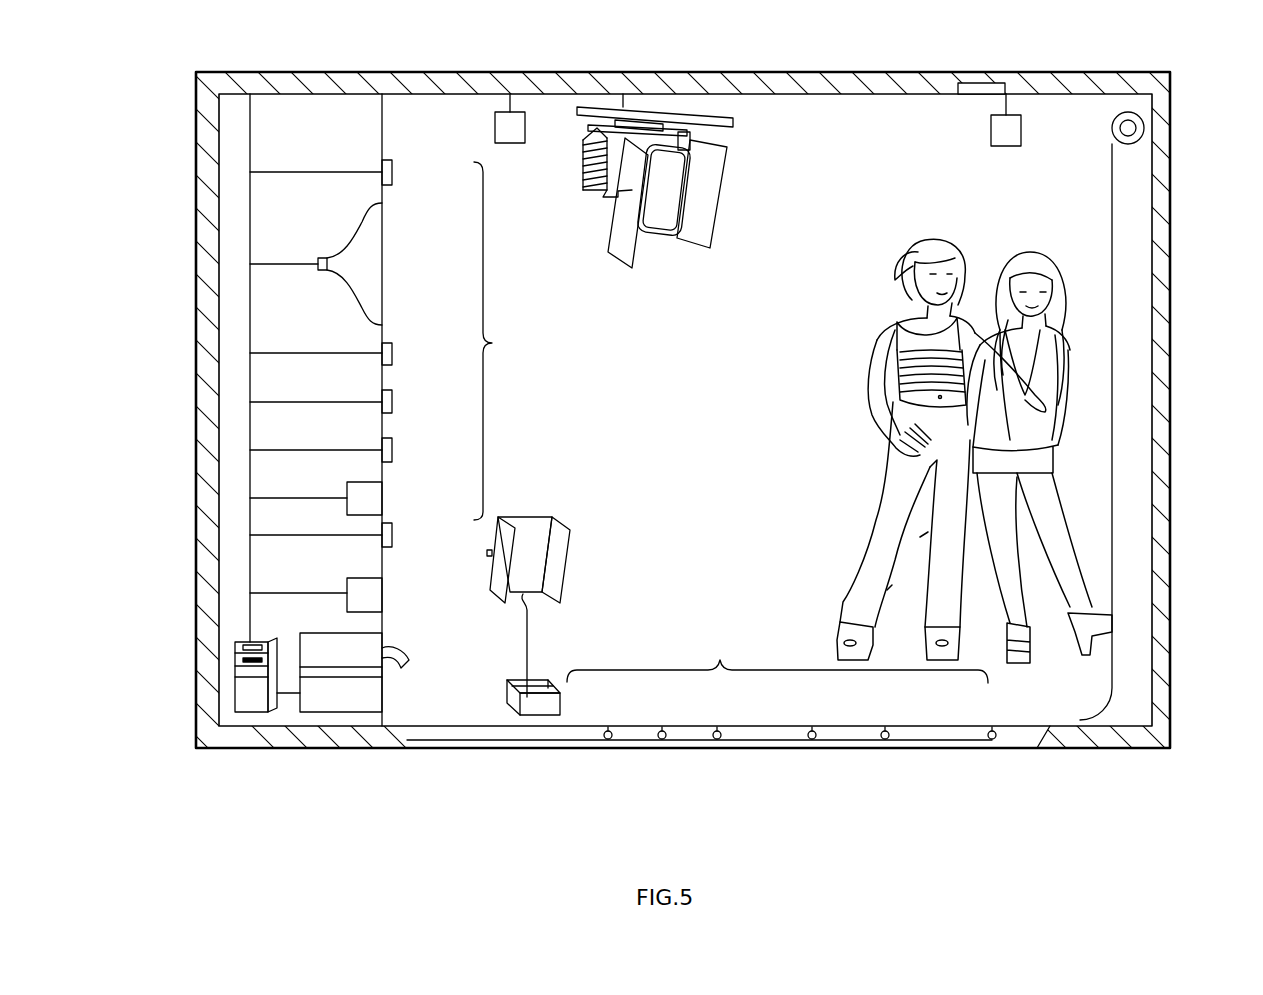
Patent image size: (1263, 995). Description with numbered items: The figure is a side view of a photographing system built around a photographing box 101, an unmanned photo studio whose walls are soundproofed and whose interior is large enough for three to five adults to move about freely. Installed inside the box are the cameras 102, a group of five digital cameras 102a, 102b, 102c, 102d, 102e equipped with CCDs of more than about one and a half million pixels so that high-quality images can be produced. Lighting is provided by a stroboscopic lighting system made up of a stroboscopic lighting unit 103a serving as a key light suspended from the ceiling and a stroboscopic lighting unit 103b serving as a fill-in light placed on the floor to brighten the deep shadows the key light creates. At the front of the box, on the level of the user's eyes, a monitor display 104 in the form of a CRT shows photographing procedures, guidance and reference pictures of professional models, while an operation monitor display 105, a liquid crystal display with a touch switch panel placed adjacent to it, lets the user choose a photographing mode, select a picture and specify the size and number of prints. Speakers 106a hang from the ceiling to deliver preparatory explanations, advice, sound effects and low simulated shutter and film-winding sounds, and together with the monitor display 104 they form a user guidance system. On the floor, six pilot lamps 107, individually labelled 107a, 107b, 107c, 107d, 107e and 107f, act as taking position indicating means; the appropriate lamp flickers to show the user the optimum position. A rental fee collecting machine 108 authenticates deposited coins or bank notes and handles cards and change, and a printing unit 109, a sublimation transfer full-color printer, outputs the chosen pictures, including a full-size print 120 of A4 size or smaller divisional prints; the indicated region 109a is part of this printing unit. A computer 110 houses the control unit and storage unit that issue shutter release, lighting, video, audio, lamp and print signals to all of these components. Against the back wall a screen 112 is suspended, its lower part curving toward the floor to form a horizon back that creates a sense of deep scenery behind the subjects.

The photographing box 101 is at (194, 219).
The cameras 102 is at (504, 341).
The camera 102a is at (393, 170).
The camera 102b is at (393, 352).
The camera 102c is at (393, 400).
The camera 102d is at (393, 448).
The camera 102e is at (393, 532).
The stroboscopic lighting unit 103a is at (657, 238).
The stroboscopic lighting unit 103b is at (536, 517).
The monitor display 104 is at (362, 207).
The operation monitor display 105 is at (355, 492).
The speakers 106a is at (512, 146).
The pilot lamps 107 is at (777, 656).
The pilot lamp 107a is at (607, 727).
The pilot lamp 107b is at (665, 727).
The pilot lamp 107c is at (719, 727).
The pilot lamp 107d is at (810, 727).
The pilot lamp 107e is at (883, 727).
The pilot lamp 107f is at (990, 728).
The rental fee collecting machine 108 is at (355, 588).
The printing unit 109 is at (368, 703).
The control unit panel 109a is at (372, 640).
The computer 110 is at (245, 707).
The screen 112 is at (1113, 381).
The full-size print 120 is at (409, 658).